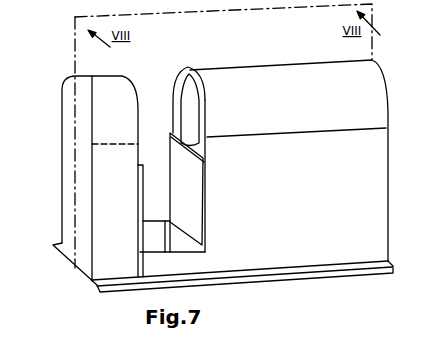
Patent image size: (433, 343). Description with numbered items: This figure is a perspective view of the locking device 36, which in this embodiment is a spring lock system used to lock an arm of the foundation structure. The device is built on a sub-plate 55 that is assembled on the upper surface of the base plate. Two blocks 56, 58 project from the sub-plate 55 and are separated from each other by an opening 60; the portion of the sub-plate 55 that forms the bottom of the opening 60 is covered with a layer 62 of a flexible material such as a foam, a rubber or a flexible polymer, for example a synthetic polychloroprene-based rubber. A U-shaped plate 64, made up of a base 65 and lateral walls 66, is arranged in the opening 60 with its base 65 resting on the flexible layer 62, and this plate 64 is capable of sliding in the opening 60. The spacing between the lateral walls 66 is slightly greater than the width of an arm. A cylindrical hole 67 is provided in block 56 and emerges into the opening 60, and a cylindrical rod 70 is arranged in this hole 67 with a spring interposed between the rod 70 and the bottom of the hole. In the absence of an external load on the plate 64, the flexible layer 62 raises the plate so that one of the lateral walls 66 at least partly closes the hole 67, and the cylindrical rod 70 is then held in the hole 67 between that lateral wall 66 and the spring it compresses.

The locking device 36 is at (252, 40).
The sub-plate 55 is at (310, 275).
The block 56 is at (375, 184).
The block 58 is at (62, 192).
The opening 60 is at (150, 102).
The layer of flexible material 62 is at (183, 260).
The U-shaped plate 64 is at (160, 243).
The base 65 is at (167, 243).
The lateral walls 66 is at (207, 218).
The cylindrical hole 67 is at (187, 68).
The cylindrical rod 70 is at (190, 113).